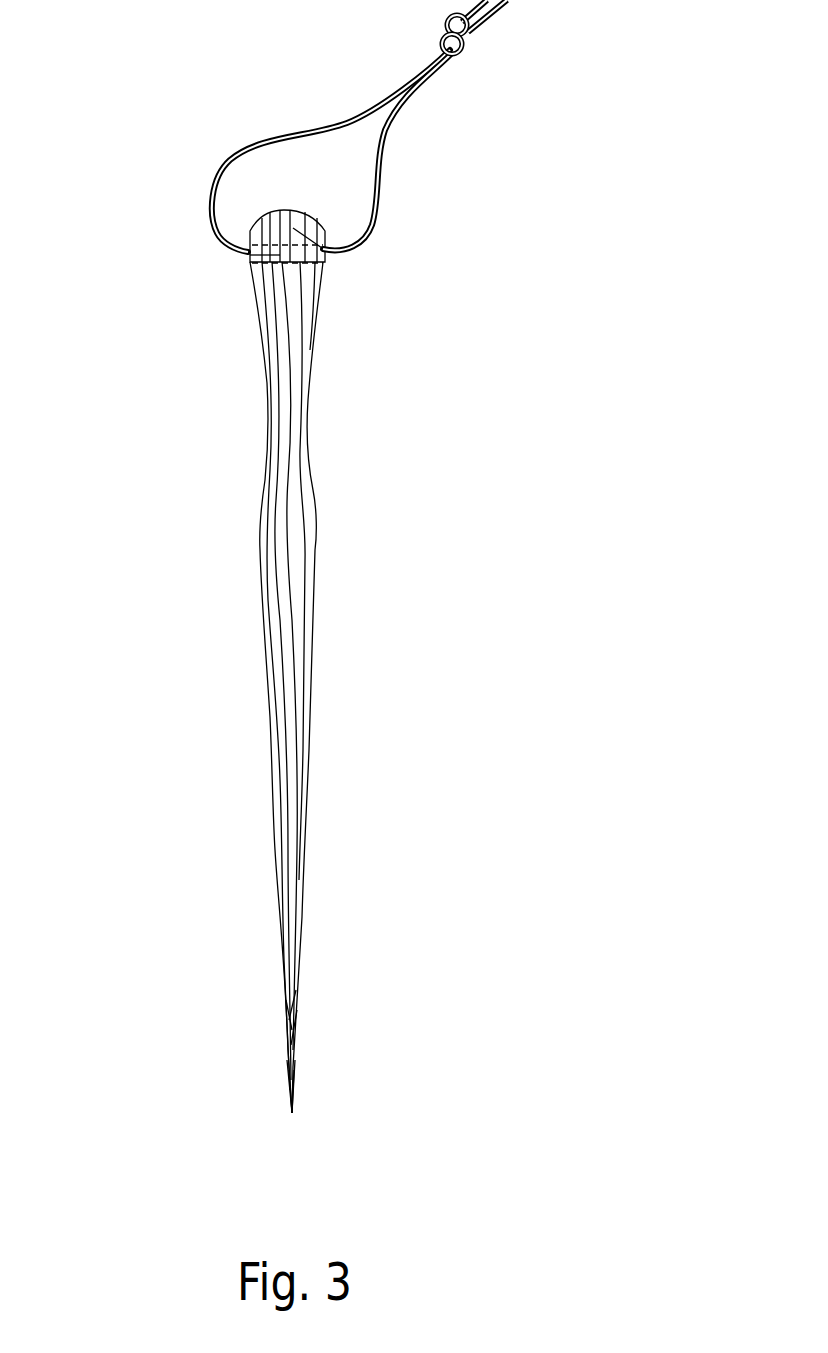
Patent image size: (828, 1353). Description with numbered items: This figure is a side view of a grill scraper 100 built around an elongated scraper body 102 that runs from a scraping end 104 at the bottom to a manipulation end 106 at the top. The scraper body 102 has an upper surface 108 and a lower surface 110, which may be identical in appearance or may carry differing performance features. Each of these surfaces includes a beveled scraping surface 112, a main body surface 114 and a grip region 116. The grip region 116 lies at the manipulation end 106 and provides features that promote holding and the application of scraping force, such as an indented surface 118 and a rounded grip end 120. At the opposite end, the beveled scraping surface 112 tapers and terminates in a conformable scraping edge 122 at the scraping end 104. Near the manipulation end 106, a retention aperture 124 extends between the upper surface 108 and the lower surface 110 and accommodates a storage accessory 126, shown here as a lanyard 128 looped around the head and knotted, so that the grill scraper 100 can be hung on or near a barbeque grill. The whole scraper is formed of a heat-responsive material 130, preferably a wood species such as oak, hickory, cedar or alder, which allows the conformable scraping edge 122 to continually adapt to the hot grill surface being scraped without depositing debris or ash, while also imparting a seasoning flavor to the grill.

The grill scraper 100 is at (445, 642).
The scraper body 102 is at (317, 567).
The scraping end 104 is at (292, 1113).
The manipulation end 106 is at (285, 210).
The upper surface 108 is at (265, 665).
The lower surface 110 is at (308, 767).
The beveled scraping surface 112 is at (287, 1047).
The main body surface 114 is at (273, 832).
The grip region 116 is at (308, 438).
The indented surface 118 is at (268, 465).
The rounded grip end 120 is at (355, 250).
The conformable scraping edge 122 is at (292, 1113).
The retention aperture 124 is at (252, 252).
The storage accessory 126 is at (230, 157).
The lanyard 128 is at (427, 78).
The heat-responsive material 130 is at (298, 1022).